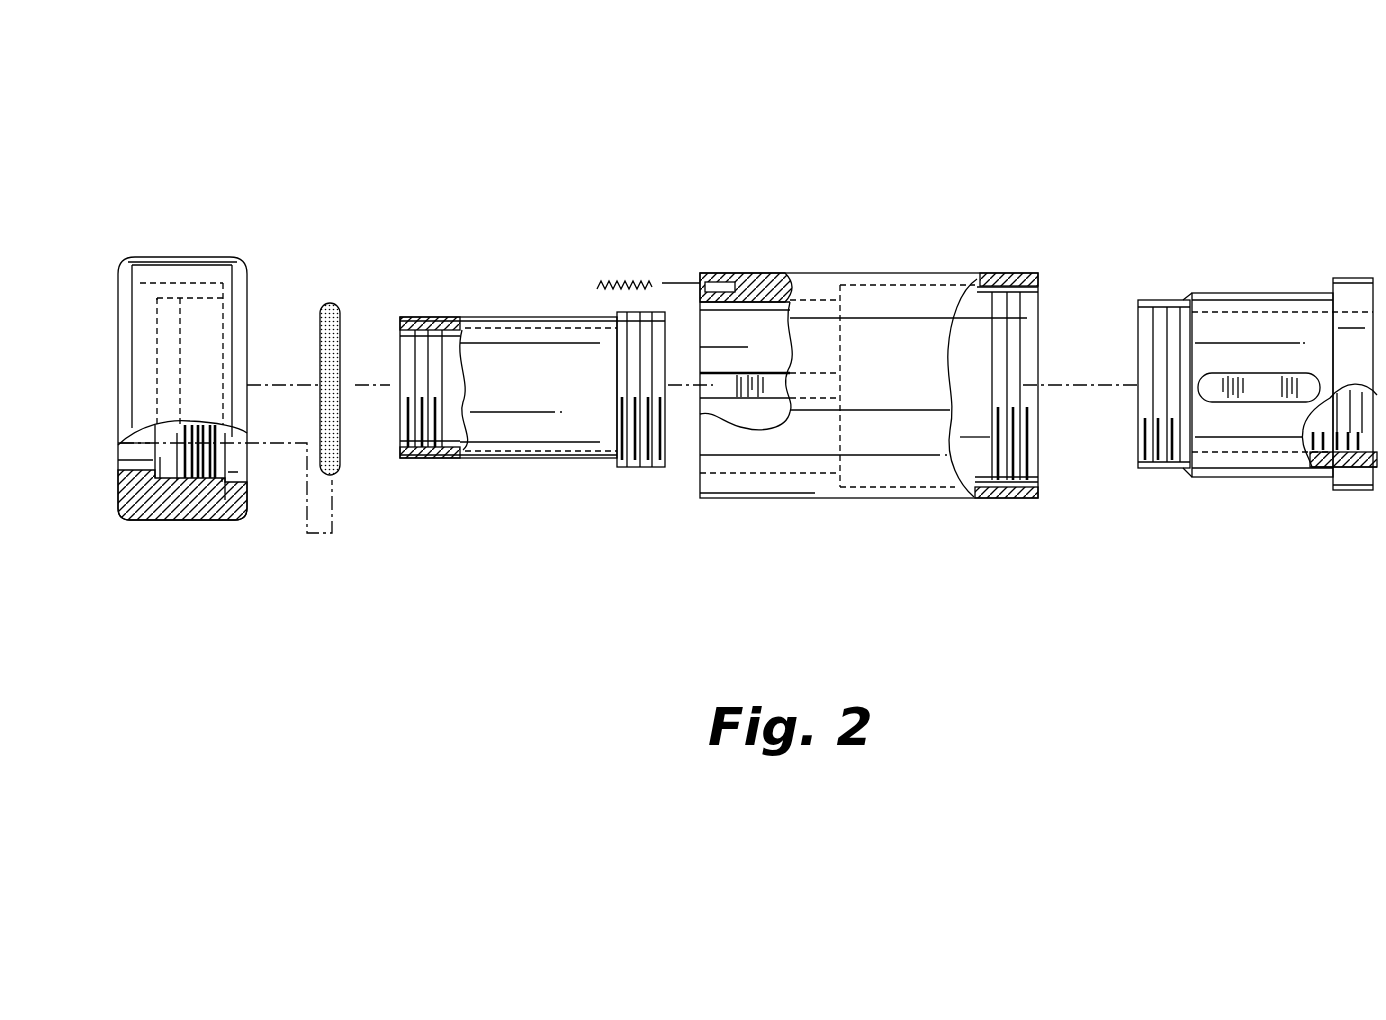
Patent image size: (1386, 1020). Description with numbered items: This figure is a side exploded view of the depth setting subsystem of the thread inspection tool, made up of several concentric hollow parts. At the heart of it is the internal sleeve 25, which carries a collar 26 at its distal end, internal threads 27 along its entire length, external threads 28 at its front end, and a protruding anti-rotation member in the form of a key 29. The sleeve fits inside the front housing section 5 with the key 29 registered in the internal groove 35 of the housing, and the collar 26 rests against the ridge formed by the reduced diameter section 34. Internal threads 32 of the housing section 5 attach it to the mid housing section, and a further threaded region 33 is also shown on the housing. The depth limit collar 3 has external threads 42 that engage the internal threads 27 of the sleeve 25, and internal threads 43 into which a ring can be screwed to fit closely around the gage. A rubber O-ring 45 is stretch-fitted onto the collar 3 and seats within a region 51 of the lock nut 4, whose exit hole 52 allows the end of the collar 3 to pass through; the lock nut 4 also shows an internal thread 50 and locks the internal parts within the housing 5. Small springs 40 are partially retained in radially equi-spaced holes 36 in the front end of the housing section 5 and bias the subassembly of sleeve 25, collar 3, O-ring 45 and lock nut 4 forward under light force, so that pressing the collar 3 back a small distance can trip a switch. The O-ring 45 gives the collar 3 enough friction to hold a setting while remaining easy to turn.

The depth limit collar 3 is at (530, 302).
The lock nut 4 is at (191, 242).
The front housing section 5 is at (877, 202).
The internal sleeve 25 is at (1247, 240).
The collar 26 is at (1350, 290).
The internal threads 27 is at (1356, 425).
The external threads 28 is at (1157, 335).
The key 29 is at (1258, 387).
The internal threads 32 is at (1020, 333).
The thread 33 is at (979, 452).
The reduced diameter section 34 is at (752, 338).
The internal groove 35 is at (775, 390).
The radially equi-spaced holes 36 is at (715, 287).
The small springs 40 is at (626, 277).
The external threads 42 is at (640, 470).
The internal threads 43 is at (410, 360).
The rubber O-ring 45 is at (330, 300).
The internal thread 50 is at (237, 460).
The region 51 is at (157, 310).
The exit hole 52 is at (130, 452).